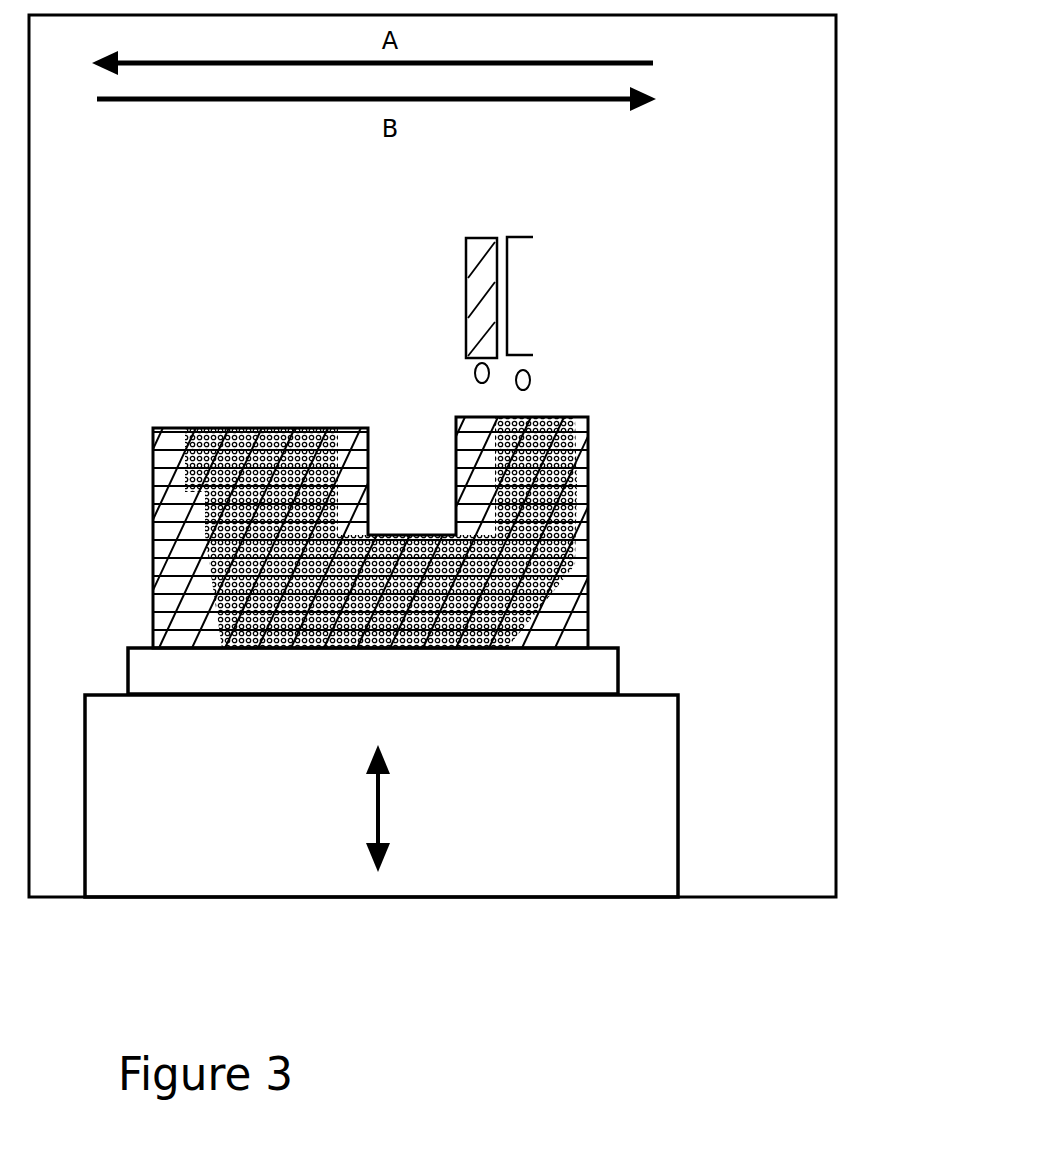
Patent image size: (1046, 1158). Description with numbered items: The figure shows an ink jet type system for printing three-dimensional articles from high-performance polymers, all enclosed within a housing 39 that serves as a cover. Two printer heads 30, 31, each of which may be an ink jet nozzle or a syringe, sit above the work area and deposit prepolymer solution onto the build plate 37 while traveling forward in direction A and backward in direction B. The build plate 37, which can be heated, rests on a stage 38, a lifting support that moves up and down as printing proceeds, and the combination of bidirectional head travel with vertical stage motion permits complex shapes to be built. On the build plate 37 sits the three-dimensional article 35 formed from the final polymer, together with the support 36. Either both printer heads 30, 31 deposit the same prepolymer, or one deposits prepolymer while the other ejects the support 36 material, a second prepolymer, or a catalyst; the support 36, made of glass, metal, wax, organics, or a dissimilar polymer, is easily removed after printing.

The printer head 30 is at (526, 230).
The printer head 31 is at (489, 230).
The 3D article 35 is at (295, 420).
The support 36 is at (600, 460).
The build plate 37 is at (618, 689).
The stage 38 is at (680, 777).
The housing 39 is at (839, 777).